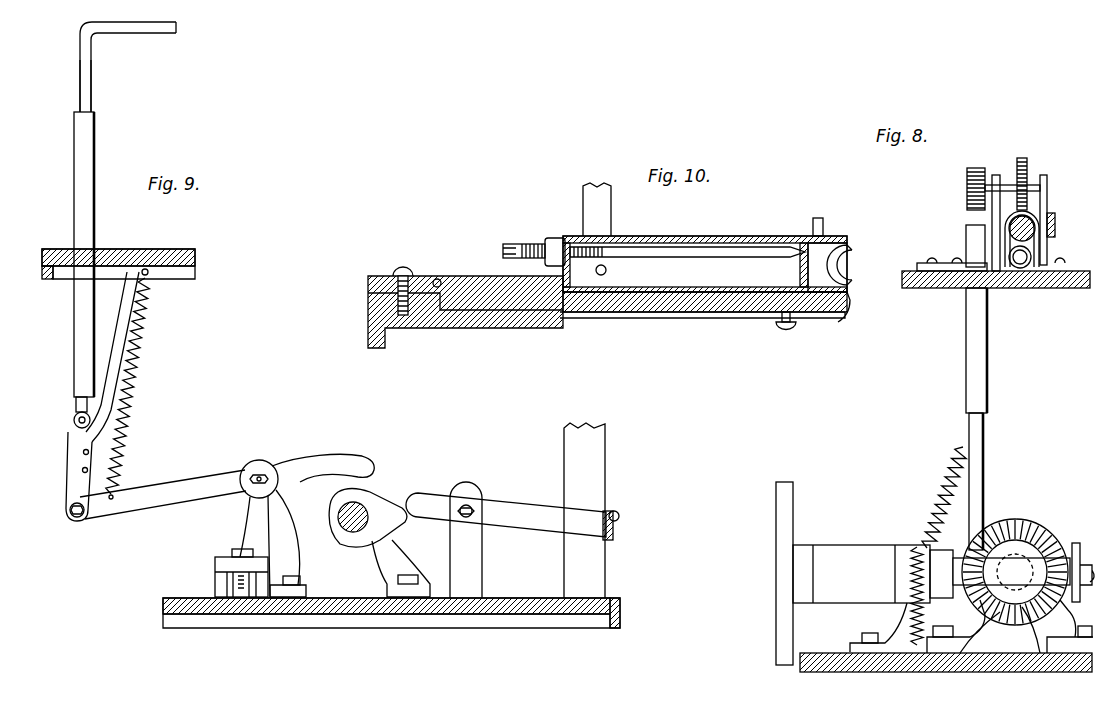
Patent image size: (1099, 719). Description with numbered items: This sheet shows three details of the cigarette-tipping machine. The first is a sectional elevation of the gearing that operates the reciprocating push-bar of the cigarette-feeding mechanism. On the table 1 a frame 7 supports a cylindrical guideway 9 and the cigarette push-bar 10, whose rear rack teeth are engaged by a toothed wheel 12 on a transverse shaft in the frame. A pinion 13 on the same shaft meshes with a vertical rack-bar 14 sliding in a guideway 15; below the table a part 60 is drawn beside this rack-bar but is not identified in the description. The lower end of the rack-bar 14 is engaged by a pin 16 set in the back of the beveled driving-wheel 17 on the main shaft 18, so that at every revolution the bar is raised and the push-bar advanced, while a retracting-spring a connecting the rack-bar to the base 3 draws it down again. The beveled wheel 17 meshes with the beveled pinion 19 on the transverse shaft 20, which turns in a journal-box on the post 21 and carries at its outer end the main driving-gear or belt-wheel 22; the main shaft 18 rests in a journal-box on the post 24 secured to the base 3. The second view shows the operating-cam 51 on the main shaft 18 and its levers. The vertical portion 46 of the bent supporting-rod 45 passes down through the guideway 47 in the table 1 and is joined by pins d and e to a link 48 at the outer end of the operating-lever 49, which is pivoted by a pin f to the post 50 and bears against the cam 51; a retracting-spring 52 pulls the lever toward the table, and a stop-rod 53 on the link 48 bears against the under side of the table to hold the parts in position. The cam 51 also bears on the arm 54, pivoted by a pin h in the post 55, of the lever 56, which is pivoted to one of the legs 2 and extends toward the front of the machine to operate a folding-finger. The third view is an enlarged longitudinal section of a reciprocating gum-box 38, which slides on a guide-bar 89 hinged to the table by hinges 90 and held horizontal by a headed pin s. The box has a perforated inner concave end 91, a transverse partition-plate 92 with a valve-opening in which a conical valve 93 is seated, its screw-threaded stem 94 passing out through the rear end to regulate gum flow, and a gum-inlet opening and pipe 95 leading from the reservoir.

In FIG. 9, the table 1 is at (42, 258).
In FIG. 10, the table 1 is at (368, 318).
In FIG. 8, the table 1 is at (996, 246).
In FIG. 9, the leg 2 is at (606, 446).
In FIG. 9, the base 3 is at (165, 600).
In FIG. 8, the base 3 is at (858, 667).
In FIG. 9, the frame 7 is at (617, 512).
In FIG. 8, the frame 7 is at (1035, 216).
In FIG. 9, the guideway 9 is at (330, 480).
In FIG. 8, the guideway 9 is at (1040, 243).
In FIG. 8, the cigarette push-bar 10 is at (1056, 225).
In FIG. 8, the toothed wheel 12 is at (1028, 166).
In FIG. 8, the pinion 13 is at (967, 190).
In FIG. 8, the vertical rack-bar 14 is at (966, 221).
In FIG. 8, the guideway 15 is at (966, 347).
In FIG. 8, the pin 16 is at (1003, 520).
In FIG. 8, the beveled driving-wheel 17 is at (1024, 556).
In FIG. 9, the main shaft 18 is at (340, 525).
In FIG. 8, the main shaft 18 is at (1028, 596).
In FIG. 8, the beveled pinion 19 is at (1075, 543).
In FIG. 8, the transverse shaft 20 is at (1012, 626).
In FIG. 8, the post 21 is at (901, 553).
In FIG. 8, the main driving-gear or belt-wheel 22 is at (793, 497).
In FIG. 9, the post 24 is at (370, 557).
In FIG. 8, the post 24 is at (993, 640).
In FIG. 10, the gum-box 38 is at (694, 237).
In FIG. 9, the bent supporting-rod 45 is at (129, 67).
In FIG. 9, the vertical portion of supporting-rod 46 is at (54, 405).
In FIG. 9, the guideway 47 is at (74, 160).
In FIG. 9, the link 48 is at (68, 460).
In FIG. 9, the operating-lever 49 is at (163, 485).
In FIG. 9, the post 50 is at (243, 535).
In FIG. 9, the operating-cam 51 is at (378, 497).
In FIG. 9, the retracting-spring 52 is at (140, 344).
In FIG. 9, the stop-rod 53 is at (108, 393).
In FIG. 9, the arm 54 is at (506, 507).
In FIG. 9, the post 55 is at (483, 540).
In FIG. 9, the lever 56 is at (614, 535).
In FIG. 8, the bearing 60 is at (1018, 270).
In FIG. 10, the guide-bar 89 is at (692, 304).
In FIG. 10, the hinge 90 is at (421, 282).
In FIG. 10, the concave end 91 is at (836, 255).
In FIG. 10, the transverse partition-plate 92 is at (800, 270).
In FIG. 10, the conical valve 93 is at (792, 247).
In FIG. 10, the screw-threaded stem 94 is at (527, 243).
In FIG. 10, the gum-inlet opening and pipe 95 is at (612, 216).
In FIG. 8, the retracting-spring a is at (942, 497).
In FIG. 9, the pin d is at (74, 421).
In FIG. 9, the pin e is at (85, 522).
In FIG. 9, the pin f is at (259, 470).
In FIG. 9, the pin h is at (468, 505).
In FIG. 10, the headed pin s is at (796, 324).